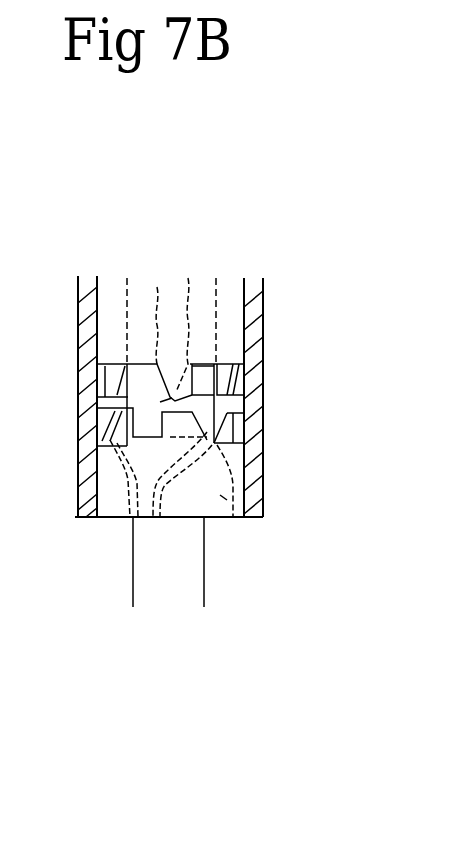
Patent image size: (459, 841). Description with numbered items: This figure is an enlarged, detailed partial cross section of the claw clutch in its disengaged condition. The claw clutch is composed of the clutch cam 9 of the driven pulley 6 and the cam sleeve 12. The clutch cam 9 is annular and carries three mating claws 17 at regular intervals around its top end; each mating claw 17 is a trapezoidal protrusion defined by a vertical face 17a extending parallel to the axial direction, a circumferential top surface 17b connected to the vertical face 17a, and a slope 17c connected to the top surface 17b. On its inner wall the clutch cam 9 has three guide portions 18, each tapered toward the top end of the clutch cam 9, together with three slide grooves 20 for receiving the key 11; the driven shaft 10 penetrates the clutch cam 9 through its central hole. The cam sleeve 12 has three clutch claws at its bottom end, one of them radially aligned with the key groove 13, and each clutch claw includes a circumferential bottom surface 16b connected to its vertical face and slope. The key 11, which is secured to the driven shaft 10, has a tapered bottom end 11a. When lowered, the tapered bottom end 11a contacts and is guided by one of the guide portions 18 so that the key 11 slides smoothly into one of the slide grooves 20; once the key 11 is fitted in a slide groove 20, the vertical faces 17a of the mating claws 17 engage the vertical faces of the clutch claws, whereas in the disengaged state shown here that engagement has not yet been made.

The driven pulley 6 is at (80, 292).
The cam sleeve 12 is at (232, 300).
The key groove 13 is at (157, 287).
The key 11 is at (170, 288).
The tapered bottom end 11a is at (97, 366).
The circumferencial bottom surface 16b is at (205, 362).
The mating claw 17 is at (202, 418).
The vertical face 17a is at (237, 431).
The circumferencial top surface 17b is at (160, 408).
The slope 17c is at (97, 442).
The slide groove 20 is at (132, 532).
The guide portion 18 is at (242, 517).
The clutch cam 9 is at (222, 519).
The driven shaft 10 is at (193, 582).